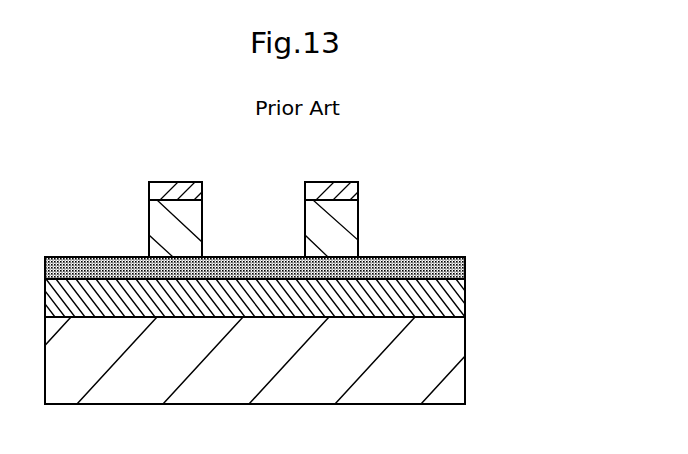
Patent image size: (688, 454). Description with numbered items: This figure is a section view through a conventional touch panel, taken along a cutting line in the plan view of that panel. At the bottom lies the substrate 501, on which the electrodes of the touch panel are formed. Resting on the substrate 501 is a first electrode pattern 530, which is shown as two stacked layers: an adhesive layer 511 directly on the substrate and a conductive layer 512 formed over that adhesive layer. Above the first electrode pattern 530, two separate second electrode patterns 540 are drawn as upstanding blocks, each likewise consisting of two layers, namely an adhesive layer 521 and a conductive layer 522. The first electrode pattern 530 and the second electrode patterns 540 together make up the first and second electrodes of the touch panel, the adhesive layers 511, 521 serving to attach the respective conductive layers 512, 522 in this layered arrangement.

The substrate 501 is at (443, 357).
The adhesive layer 511 is at (445, 299).
The conductive layer 512 is at (466, 268).
The first electrode pattern 530 is at (315, 283).
The adhesive layer 521 is at (335, 191).
The conductive layer 522 is at (335, 215).
The second electrode pattern 540 is at (334, 209).